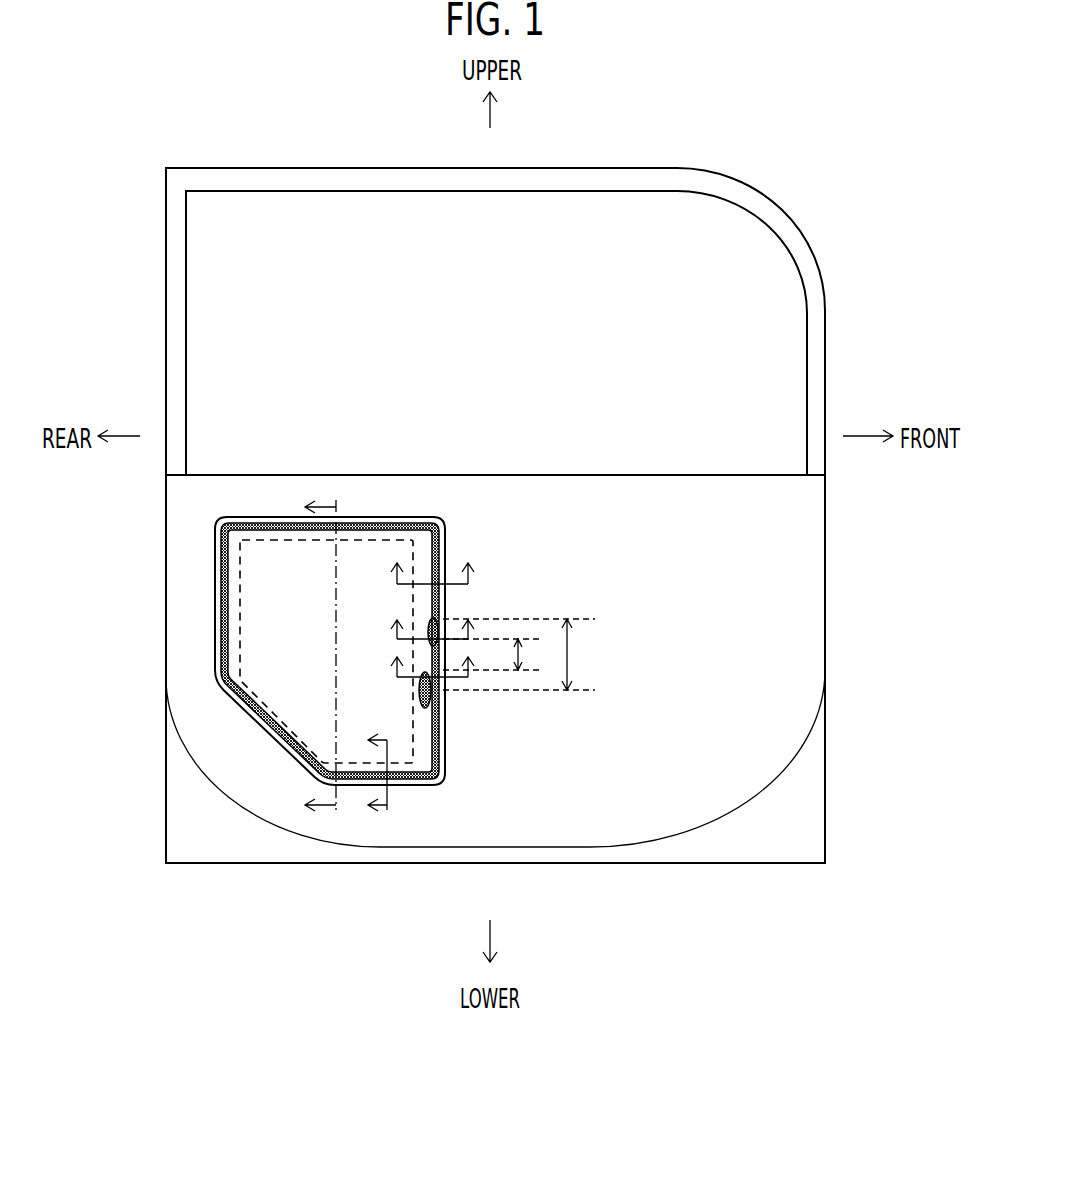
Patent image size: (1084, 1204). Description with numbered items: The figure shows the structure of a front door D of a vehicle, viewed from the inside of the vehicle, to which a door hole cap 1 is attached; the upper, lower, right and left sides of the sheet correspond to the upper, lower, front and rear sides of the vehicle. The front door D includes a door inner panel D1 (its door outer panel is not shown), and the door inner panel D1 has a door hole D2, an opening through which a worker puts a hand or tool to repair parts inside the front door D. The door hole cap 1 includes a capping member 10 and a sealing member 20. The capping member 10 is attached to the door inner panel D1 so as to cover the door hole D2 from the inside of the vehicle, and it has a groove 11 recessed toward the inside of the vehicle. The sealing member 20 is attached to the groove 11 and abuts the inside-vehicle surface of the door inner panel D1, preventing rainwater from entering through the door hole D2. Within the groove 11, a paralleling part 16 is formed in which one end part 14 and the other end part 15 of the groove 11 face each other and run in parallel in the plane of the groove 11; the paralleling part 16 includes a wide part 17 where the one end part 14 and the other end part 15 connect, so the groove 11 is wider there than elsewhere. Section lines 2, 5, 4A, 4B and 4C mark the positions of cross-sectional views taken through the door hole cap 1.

The door hole cap 1 is at (297, 669).
The capping member 10 is at (262, 612).
The sealing member 20 is at (222, 663).
The groove 11 is at (273, 733).
The one end part 14 is at (422, 700).
The other end part 15 is at (434, 628).
The paralleling part 16 is at (520, 654).
The wide part 17 is at (492, 655).
The section line II-II 2 is at (330, 656).
The section line V-V 5 is at (385, 768).
The section line IVA-IVA 4A is at (430, 569).
The section line IVB-IVB 4B is at (428, 638).
The section line IVC-IVC 4C is at (428, 676).
The front door D is at (123, 198).
The door inner panel D1 is at (730, 822).
The door hole D2 is at (226, 567).